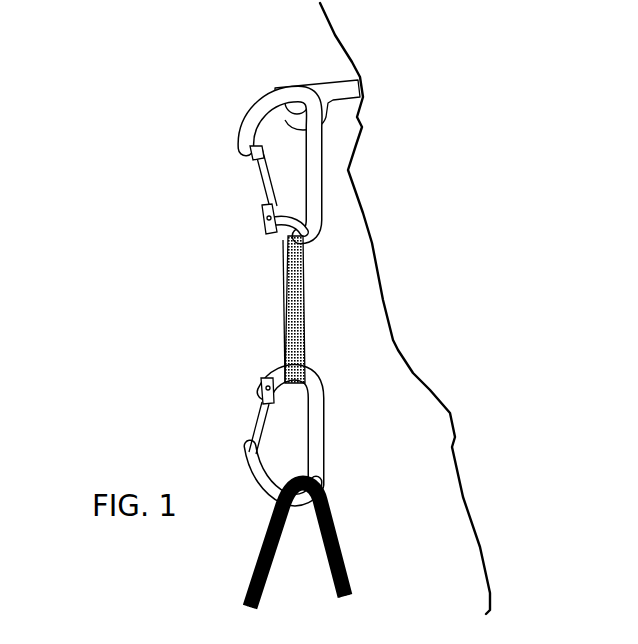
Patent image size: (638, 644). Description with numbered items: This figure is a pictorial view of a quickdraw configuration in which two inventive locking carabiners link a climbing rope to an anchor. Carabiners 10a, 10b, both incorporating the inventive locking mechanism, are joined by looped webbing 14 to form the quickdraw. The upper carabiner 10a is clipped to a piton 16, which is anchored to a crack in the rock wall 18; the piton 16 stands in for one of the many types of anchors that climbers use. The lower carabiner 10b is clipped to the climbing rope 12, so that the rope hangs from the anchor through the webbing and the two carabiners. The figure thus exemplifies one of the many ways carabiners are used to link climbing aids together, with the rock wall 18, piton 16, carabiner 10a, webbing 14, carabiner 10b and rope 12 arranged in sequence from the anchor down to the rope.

The carabiner 10a is at (220, 205).
The carabiner 10b is at (233, 402).
The climbing rope 12 is at (345, 548).
The looped webbing 14 is at (283, 302).
The piton 16 is at (283, 82).
The rock wall 18 is at (330, 38).